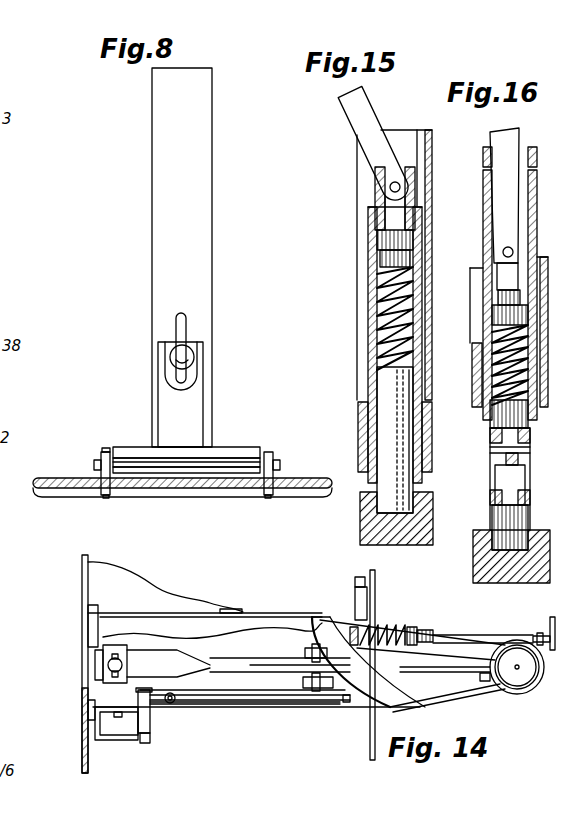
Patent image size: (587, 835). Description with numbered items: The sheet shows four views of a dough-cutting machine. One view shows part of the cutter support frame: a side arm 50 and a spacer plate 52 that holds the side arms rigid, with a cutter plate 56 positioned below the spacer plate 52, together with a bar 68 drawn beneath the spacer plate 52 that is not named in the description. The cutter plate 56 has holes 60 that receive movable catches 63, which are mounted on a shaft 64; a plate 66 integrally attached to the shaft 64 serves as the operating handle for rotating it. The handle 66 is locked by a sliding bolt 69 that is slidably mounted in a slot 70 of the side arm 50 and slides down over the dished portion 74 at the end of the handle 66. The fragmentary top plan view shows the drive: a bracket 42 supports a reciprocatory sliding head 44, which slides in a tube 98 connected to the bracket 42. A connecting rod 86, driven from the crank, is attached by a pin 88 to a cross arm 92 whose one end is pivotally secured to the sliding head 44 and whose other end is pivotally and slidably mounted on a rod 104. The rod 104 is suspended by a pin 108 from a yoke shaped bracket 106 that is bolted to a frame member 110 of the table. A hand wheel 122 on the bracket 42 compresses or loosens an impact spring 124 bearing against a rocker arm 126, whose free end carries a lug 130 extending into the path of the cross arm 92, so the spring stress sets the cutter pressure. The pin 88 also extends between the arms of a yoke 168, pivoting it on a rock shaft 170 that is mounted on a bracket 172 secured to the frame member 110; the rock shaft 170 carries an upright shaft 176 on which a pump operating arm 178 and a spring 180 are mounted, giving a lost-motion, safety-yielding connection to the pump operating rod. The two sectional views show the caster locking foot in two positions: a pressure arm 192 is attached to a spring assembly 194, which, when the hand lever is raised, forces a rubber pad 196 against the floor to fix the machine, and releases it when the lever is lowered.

In FIG. 8, the side arm 50 is at (212, 256).
In FIG. 8, the spacer plate 52 is at (256, 448).
In FIG. 8, the cutter plate 56 is at (318, 478).
In FIG. 8, the holes 60 is at (110, 490).
In FIG. 8, the movable catches 63 is at (102, 497).
In FIG. 8, the shaft 64 is at (105, 447).
In FIG. 8, the plate 66 is at (203, 399).
In FIG. 8, the cross bar 68 is at (220, 462).
In FIG. 8, the sliding bolt 69 is at (193, 350).
In FIG. 8, the slot 70 is at (112, 450).
In FIG. 8, the dished portion 74 is at (175, 372).
In FIG. 15, the pressure arm 192 is at (352, 130).
In FIG. 15, the spring assembly 194 is at (377, 281).
In FIG. 15, the pad 196 is at (360, 532).
In FIG. 14, the bracket 42 is at (473, 700).
In FIG. 14, the sliding head 44 is at (520, 667).
In FIG. 14, the connecting rod 86 is at (305, 653).
In FIG. 14, the pin 88 is at (322, 690).
In FIG. 14, the cross arm 92 is at (220, 660).
In FIG. 14, the tube 98 is at (535, 685).
In FIG. 14, the rod 104 is at (127, 663).
In FIG. 14, the yoke shaped bracket 106 is at (107, 684).
In FIG. 14, the pin 108 is at (120, 650).
In FIG. 14, the frame member 110 is at (90, 718).
In FIG. 14, the hand wheel 122 is at (554, 625).
In FIG. 14, the impact spring 124 is at (398, 640).
In FIG. 14, the rocker arm 126 is at (356, 628).
In FIG. 14, the lug 130 is at (482, 678).
In FIG. 14, the yoke 168 is at (250, 688).
In FIG. 14, the rock shaft 170 is at (150, 722).
In FIG. 14, the bracket 172 is at (118, 740).
In FIG. 14, the upright shaft 176 is at (178, 695).
In FIG. 14, the pump operating arm 178 is at (232, 703).
In FIG. 14, the spring 180 is at (203, 710).